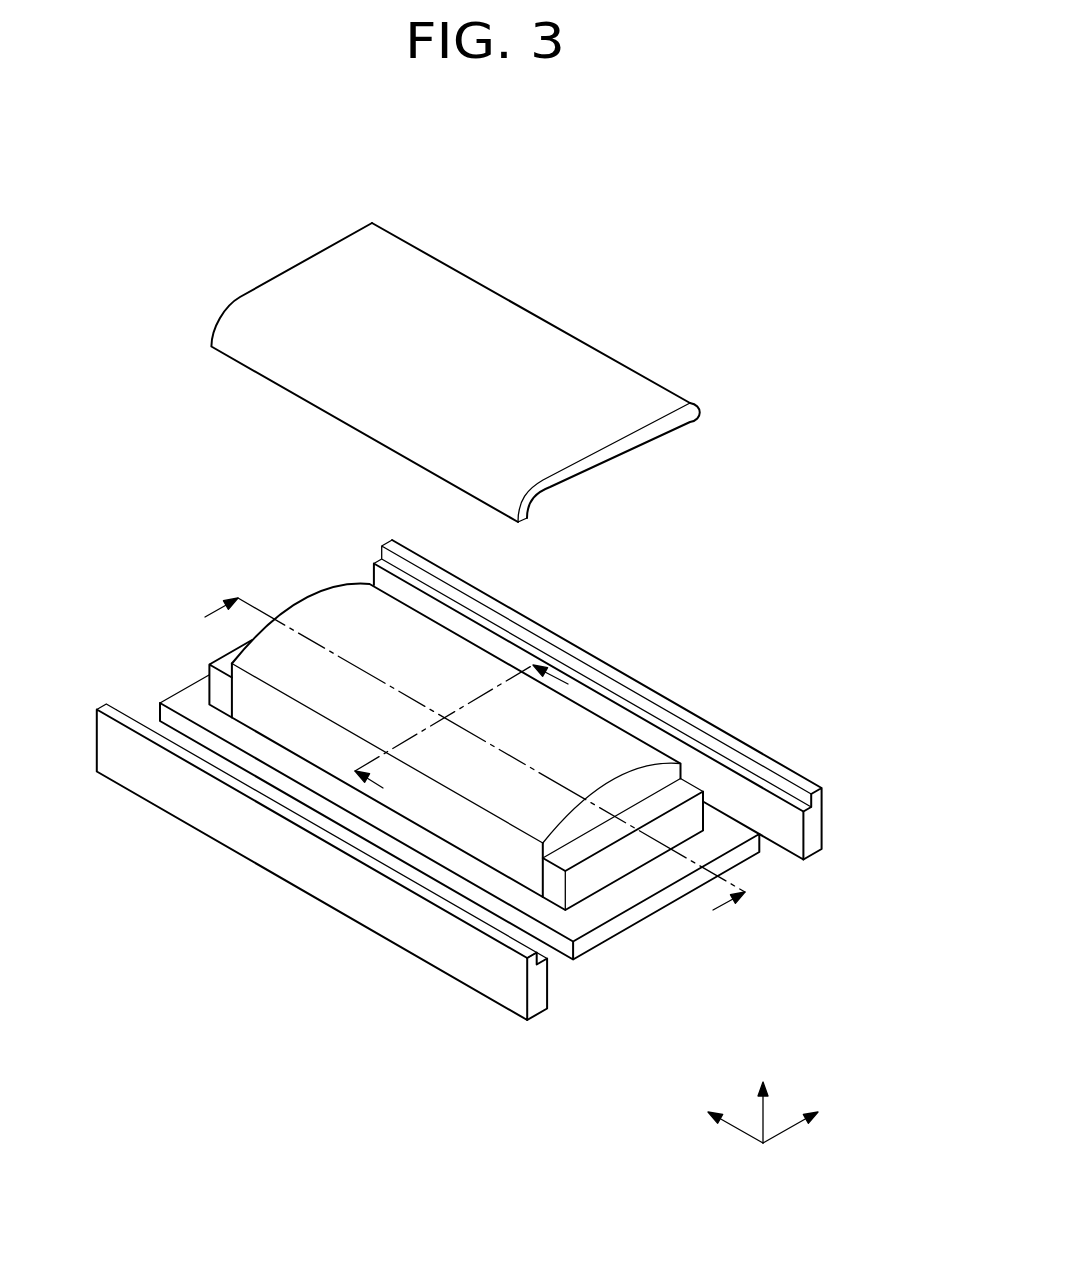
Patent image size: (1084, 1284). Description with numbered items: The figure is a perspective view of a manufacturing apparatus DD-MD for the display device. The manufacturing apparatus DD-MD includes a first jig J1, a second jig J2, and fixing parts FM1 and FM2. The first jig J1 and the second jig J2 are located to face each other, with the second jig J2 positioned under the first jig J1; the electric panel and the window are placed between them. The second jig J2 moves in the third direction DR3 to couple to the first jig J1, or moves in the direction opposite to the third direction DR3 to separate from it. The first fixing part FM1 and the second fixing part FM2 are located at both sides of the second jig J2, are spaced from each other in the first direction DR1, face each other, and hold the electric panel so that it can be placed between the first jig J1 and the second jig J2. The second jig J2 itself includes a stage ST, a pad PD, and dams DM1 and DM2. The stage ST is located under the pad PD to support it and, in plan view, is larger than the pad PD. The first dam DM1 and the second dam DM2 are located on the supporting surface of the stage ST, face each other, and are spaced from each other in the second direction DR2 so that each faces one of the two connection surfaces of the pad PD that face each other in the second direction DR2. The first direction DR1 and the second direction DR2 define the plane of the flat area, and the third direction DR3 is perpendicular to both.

The manufacturing apparatus DD-MD is at (668, 207).
The first jig J1 is at (585, 355).
The second jig J2 is at (786, 916).
The pad PD is at (297, 618).
The first dam DM1 is at (218, 664).
The second dam DM2 is at (685, 792).
The first fixing part FM1 is at (473, 973).
The second fixing part FM2 is at (812, 830).
The stage ST is at (600, 938).
The first direction DR1 is at (810, 1114).
The second direction DR2 is at (715, 1114).
The third direction DR3 is at (762, 1098).